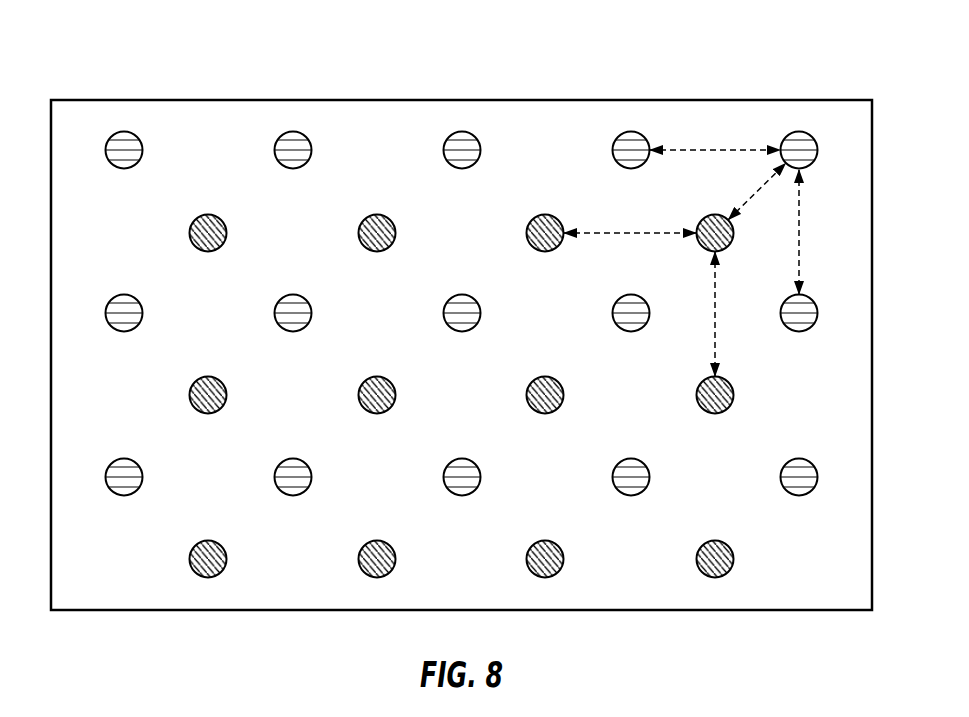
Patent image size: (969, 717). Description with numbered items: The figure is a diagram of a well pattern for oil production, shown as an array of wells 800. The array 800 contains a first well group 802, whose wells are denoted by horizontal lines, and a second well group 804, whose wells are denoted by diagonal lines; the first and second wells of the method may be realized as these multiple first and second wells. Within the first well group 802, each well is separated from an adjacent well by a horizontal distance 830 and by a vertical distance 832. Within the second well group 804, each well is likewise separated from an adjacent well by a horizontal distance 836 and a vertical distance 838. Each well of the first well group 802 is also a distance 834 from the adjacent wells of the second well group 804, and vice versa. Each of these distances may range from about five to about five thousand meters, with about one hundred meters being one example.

The array of wells 800 is at (150, 70).
The first well group 802 is at (443, 148).
The second well group 804 is at (358, 232).
The horizontal distance 830 is at (741, 150).
The vertical distance 832 is at (799, 204).
The distance 834 is at (747, 199).
The horizontal distance 836 is at (665, 233).
The vertical distance 838 is at (715, 330).